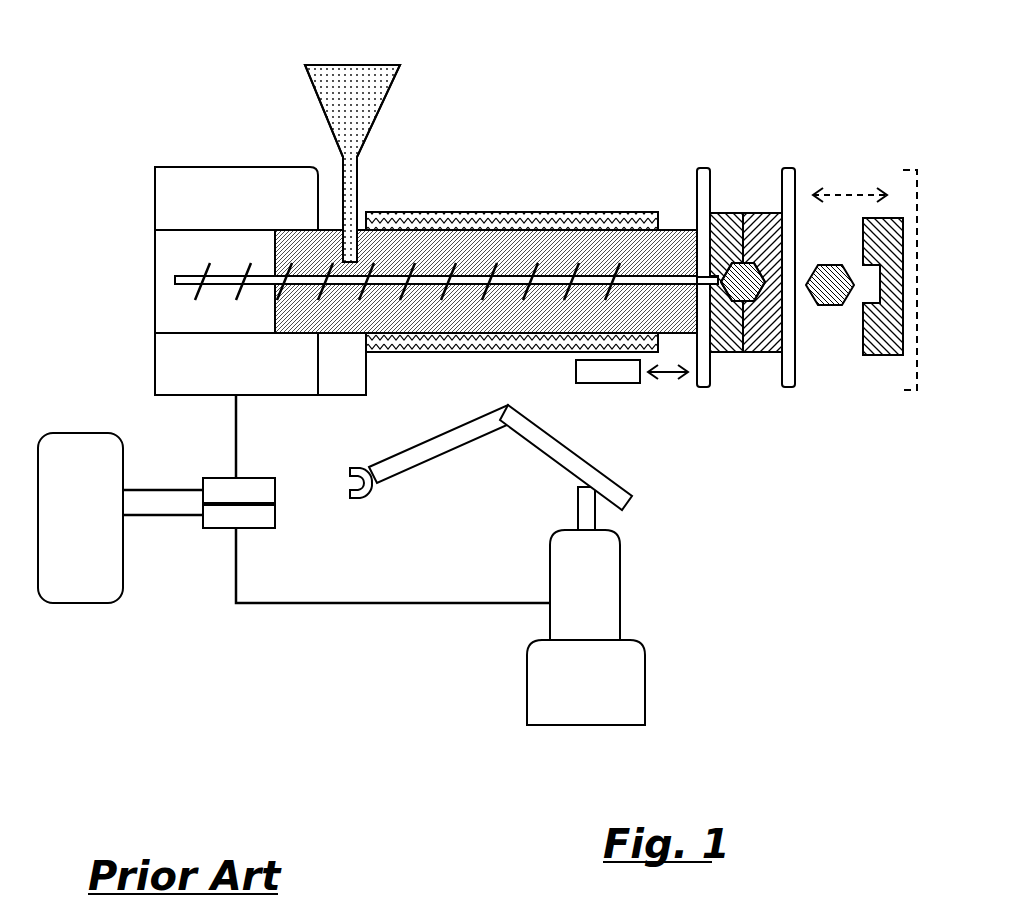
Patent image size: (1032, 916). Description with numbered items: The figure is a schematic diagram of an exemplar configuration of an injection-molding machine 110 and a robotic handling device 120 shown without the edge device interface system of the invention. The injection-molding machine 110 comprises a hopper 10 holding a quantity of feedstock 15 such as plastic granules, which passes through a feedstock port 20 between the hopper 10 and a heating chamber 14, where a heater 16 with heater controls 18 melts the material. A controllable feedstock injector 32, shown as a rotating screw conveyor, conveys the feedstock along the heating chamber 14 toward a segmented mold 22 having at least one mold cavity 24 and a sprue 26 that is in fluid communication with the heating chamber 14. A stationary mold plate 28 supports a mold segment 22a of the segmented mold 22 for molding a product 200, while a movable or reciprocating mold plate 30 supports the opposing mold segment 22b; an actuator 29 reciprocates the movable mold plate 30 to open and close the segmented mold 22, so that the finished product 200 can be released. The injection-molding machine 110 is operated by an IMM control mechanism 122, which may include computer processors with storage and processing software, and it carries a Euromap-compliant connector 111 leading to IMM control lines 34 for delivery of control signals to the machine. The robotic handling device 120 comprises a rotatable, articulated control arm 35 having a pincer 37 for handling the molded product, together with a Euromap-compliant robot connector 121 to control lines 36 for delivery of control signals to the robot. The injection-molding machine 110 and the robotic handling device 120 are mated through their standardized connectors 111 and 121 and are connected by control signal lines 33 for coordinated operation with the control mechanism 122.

The hopper 10 is at (304, 142).
The heating chamber 14 is at (453, 243).
The feedstock 15 is at (358, 103).
The heater 16 is at (478, 212).
The heater controls 18 is at (347, 365).
The feedstock port 20 is at (579, 200).
The segmented mold 22 is at (794, 301).
The mold segment 22a is at (727, 352).
The opposing mold segment 22b is at (762, 352).
The mold cavity 24 is at (735, 222).
The sprue 26 is at (692, 267).
The stationary mold plate 28 is at (698, 170).
The actuator 29 is at (610, 368).
The movable mold plate 30 is at (797, 177).
The feedstock injector 32 is at (162, 278).
The control signal lines 33 is at (173, 493).
The IMM control lines 34 is at (230, 452).
The articulated control arm 35 is at (438, 452).
The control lines 36 is at (290, 605).
The pincer 37 is at (365, 497).
The injection-molding machine 110 is at (168, 207).
The connector 111 is at (256, 490).
The robotic handling device 120 is at (541, 565).
The robot connector 121 is at (257, 518).
The IMM control mechanism 122 is at (86, 487).
The product 200 is at (748, 245).